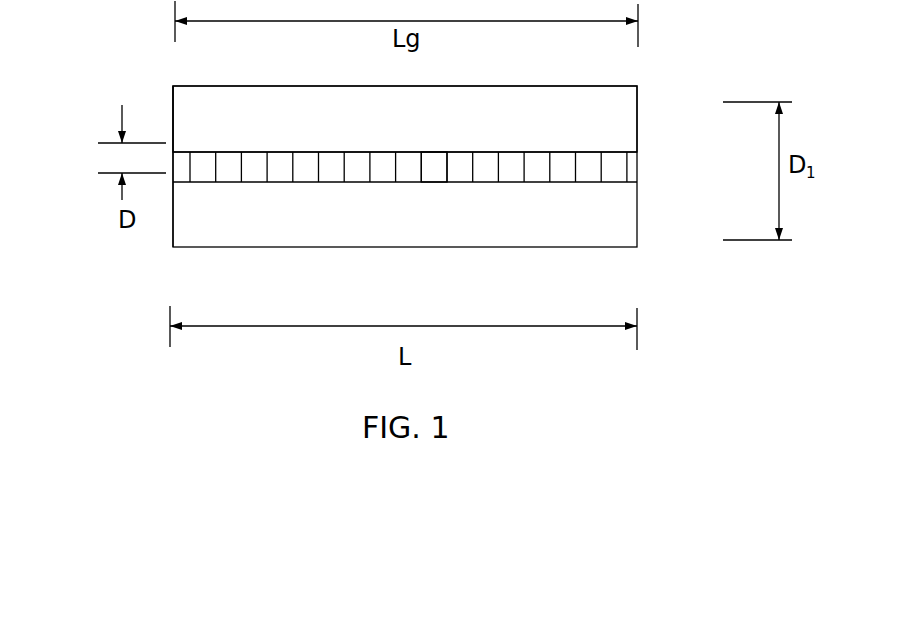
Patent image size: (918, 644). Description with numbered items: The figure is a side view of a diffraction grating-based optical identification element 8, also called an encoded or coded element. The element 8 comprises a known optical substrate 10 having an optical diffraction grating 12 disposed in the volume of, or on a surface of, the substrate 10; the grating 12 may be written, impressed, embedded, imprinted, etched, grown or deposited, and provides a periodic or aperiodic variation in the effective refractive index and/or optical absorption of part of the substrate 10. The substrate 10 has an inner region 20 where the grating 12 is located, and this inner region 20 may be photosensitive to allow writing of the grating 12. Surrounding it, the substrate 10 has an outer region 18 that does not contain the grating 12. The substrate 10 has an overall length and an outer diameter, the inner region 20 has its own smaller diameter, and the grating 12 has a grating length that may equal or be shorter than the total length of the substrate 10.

The diffraction grating-based optical identification element 8 is at (162, 98).
The optical substrate 10 is at (193, 83).
The optical diffraction grating 12 is at (423, 165).
The outer region 18 is at (618, 108).
The inner region 20 is at (610, 167).